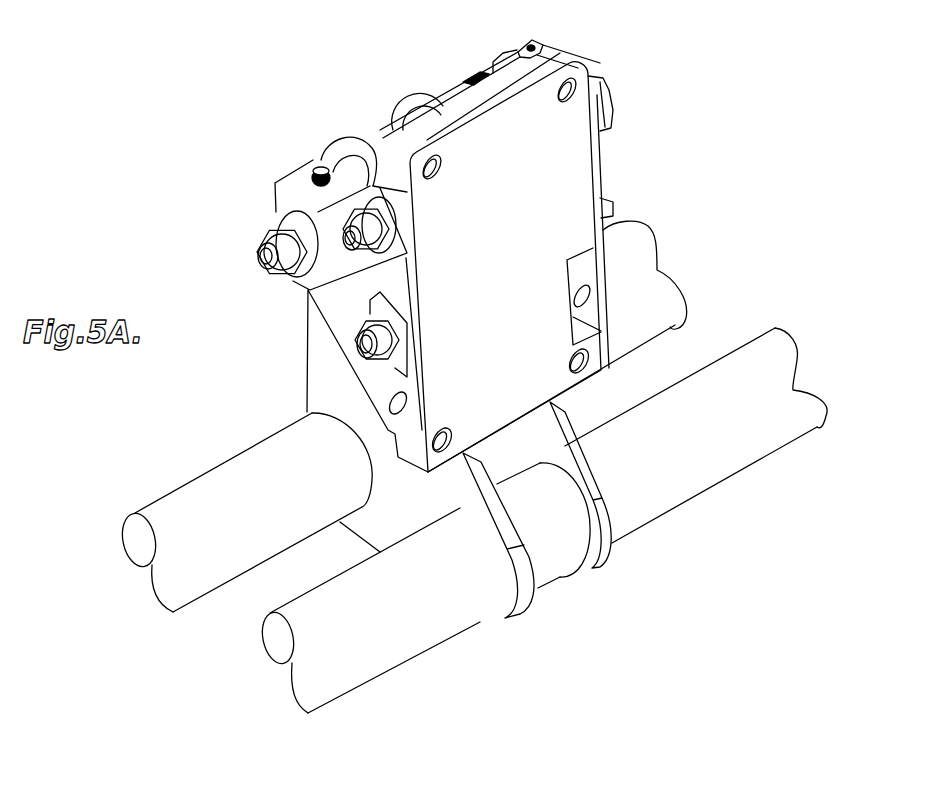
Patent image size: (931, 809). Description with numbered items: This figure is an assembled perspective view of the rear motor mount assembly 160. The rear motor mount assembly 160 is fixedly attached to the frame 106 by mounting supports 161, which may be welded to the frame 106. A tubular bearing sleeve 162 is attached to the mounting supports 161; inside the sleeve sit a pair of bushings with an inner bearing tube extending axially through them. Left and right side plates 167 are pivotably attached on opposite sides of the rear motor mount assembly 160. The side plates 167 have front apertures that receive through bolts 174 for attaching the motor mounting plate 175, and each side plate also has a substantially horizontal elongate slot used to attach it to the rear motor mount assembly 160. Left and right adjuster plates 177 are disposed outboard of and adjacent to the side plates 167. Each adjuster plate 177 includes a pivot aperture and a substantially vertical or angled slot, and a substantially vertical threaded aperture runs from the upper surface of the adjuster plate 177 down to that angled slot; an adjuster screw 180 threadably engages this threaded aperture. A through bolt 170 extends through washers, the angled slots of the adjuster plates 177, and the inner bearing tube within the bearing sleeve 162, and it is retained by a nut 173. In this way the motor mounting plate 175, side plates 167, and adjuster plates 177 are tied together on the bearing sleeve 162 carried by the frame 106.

The frame 106 is at (773, 333).
The rear motor mount assembly 160 is at (738, 198).
The mounting supports 161 is at (607, 565).
The tubular bearing sleeve 162 is at (380, 135).
The side plates 167 is at (327, 300).
The through bolt 170 is at (258, 257).
The nut 173 is at (290, 237).
The through bolts 174 is at (608, 100).
The motor mounting plate 175 is at (567, 167).
The adjuster plates 177 is at (288, 193).
The adjuster screw 180 is at (518, 42).